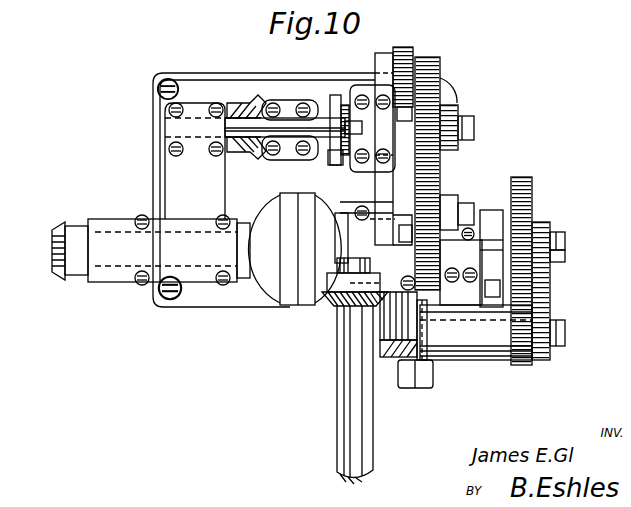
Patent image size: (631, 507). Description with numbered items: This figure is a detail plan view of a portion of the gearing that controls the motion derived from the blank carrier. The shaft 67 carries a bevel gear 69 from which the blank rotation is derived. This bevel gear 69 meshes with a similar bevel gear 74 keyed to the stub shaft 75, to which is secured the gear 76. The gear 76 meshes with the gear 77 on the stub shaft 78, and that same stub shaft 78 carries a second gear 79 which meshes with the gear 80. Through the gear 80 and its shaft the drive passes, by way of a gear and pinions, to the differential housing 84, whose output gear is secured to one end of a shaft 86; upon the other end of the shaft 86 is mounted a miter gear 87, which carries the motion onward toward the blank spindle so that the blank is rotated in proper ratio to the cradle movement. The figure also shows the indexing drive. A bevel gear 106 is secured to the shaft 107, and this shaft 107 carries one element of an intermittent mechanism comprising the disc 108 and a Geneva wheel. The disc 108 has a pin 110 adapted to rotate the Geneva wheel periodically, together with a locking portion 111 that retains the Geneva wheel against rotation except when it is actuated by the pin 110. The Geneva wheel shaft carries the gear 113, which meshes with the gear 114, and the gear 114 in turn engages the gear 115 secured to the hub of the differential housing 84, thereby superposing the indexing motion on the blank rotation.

The bevel gear 106 is at (255, 100).
The shaft 107 is at (280, 125).
The disc 108 is at (335, 95).
The pin 110 is at (338, 162).
The locking portion 111 is at (346, 108).
The gear 113 is at (442, 108).
The gear 114 is at (441, 196).
The gear 115 is at (438, 272).
The gear 80 is at (533, 195).
The second gear 79 is at (532, 262).
The gear 77 is at (549, 271).
The stub shaft 78 is at (565, 283).
The gear 76 is at (547, 356).
The stub shaft 75 is at (510, 350).
The bevel gear 74 is at (388, 372).
The bevel gear 69 is at (330, 305).
The shaft 67 is at (348, 397).
The differential housing 84 is at (318, 192).
The shaft 86 is at (128, 265).
The miter gear 87 is at (65, 280).